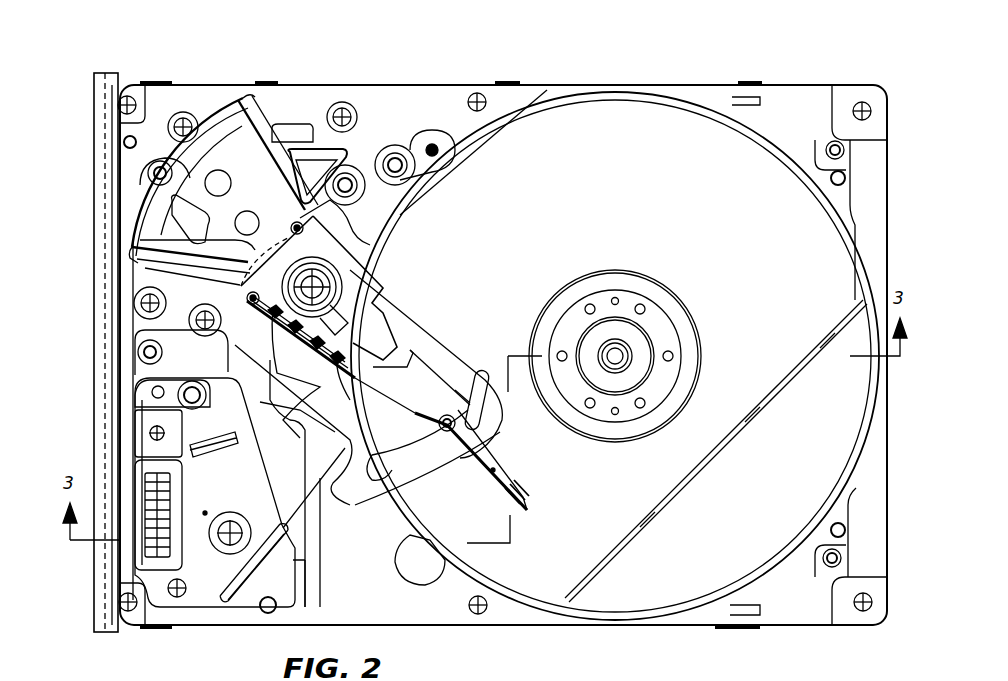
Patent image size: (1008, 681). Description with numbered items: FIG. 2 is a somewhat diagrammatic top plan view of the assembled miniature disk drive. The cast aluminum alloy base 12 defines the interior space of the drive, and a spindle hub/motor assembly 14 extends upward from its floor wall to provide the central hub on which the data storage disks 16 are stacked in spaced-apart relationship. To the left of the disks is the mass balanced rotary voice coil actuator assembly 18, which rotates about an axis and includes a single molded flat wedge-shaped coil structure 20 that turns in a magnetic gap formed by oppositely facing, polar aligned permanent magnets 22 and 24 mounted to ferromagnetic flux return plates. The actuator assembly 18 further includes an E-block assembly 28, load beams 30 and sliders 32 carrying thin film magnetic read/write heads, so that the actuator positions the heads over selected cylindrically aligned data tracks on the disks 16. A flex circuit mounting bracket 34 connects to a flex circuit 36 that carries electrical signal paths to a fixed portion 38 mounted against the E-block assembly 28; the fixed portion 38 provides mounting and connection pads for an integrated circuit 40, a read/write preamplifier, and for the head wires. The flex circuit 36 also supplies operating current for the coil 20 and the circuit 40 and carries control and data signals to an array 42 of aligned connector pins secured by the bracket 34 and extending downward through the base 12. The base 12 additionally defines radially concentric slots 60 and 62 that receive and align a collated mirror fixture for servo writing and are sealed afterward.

The base 12 is at (785, 627).
The spindle hub/motor assembly 14 is at (705, 295).
The data storage disks 16 is at (615, 356).
The rotary voice coil actuator assembly 18 is at (385, 215).
The coil structure 20 is at (248, 130).
The permanent magnet 22 is at (160, 268).
The permanent magnet 24 is at (318, 125).
The E-block assembly 28 is at (418, 374).
The load beams 30 is at (490, 485).
The sliders 32 is at (518, 490).
The flex circuit mounting bracket 34 is at (145, 400).
The flex circuit 36 is at (312, 513).
The fixed portion 38 is at (340, 382).
The integrated circuit 40 is at (272, 350).
The array of aligned connector pins 42 is at (150, 490).
The radially concentric slot 60 is at (420, 300).
The radially concentric slot 62 is at (400, 478).